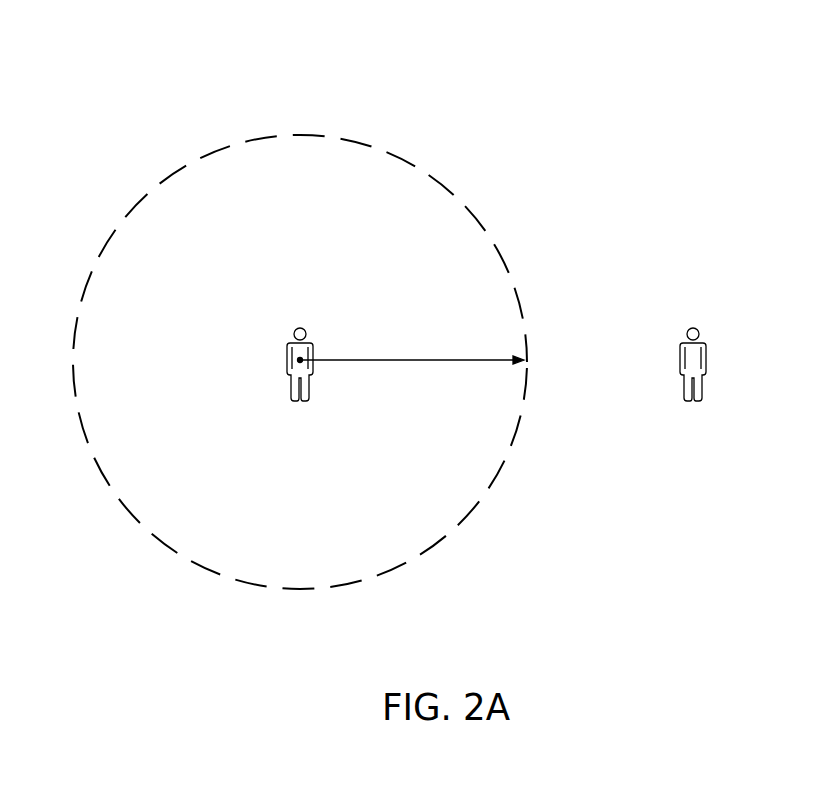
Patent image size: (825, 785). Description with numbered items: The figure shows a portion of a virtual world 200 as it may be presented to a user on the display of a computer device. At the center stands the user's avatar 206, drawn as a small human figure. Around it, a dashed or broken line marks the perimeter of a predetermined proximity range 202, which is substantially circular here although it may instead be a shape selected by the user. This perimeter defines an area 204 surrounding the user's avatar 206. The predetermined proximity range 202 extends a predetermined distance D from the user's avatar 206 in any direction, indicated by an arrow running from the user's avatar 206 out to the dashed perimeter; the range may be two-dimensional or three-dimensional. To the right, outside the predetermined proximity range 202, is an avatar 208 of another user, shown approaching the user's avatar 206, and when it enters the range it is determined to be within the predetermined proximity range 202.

The portion of a virtual world 200 is at (503, 108).
The predetermined proximity range 202 is at (495, 244).
The area surrounding the user's avatar 204 is at (324, 269).
The user's avatar 206 is at (287, 360).
The avatar of another user 208 is at (708, 361).
The predetermined distance D is at (411, 359).